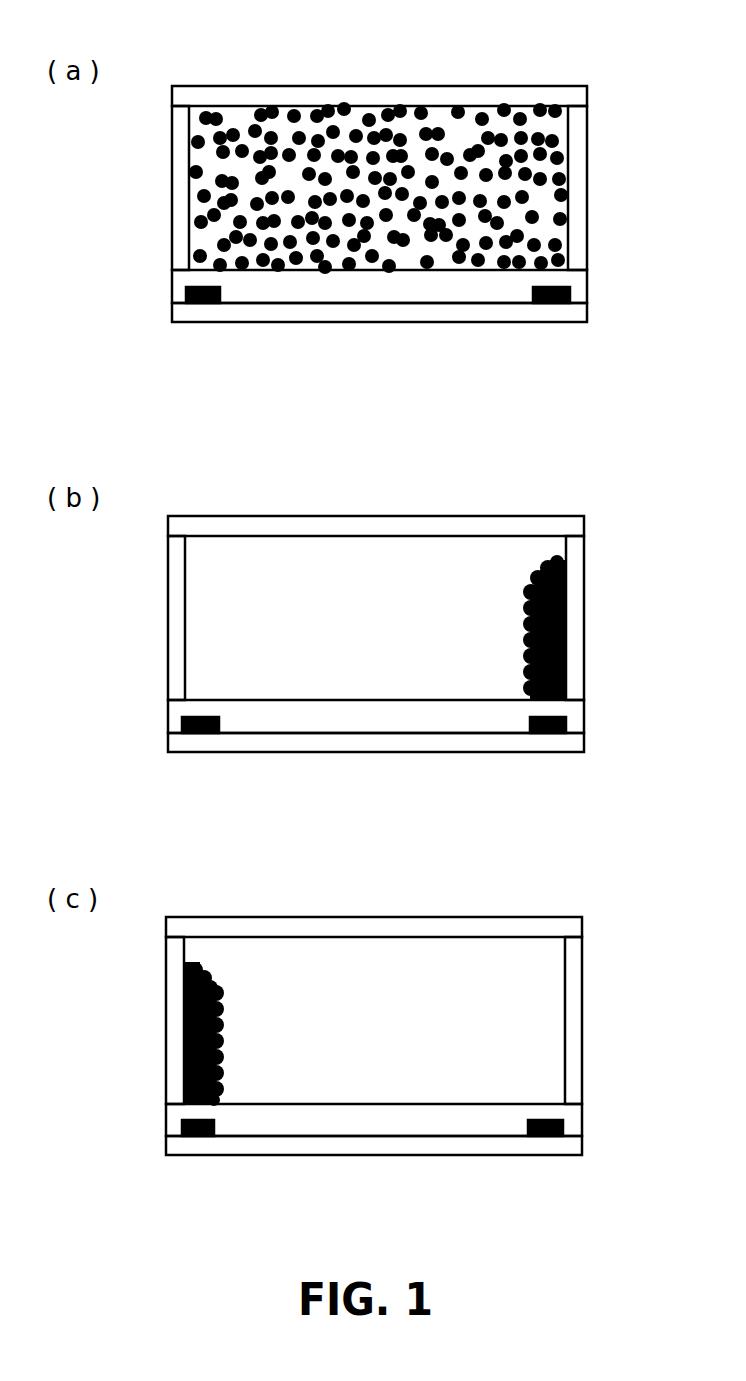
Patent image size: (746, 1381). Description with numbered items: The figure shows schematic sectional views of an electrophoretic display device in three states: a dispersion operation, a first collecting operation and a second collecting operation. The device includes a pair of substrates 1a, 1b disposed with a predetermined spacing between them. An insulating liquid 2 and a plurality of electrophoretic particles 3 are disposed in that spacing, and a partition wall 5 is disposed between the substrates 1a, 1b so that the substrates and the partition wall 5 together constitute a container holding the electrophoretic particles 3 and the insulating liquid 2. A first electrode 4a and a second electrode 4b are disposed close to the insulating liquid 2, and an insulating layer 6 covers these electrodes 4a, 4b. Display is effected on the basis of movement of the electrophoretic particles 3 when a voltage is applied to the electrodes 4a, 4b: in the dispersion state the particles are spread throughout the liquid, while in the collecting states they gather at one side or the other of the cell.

The substrate 1a is at (253, 97).
The substrate 1b is at (390, 316).
The insulating liquid 2 is at (380, 100).
The electrophoretic particles 3 is at (470, 100).
The first electrode 4a is at (200, 303).
The second electrode 4b is at (560, 303).
The partition wall 5 is at (180, 173).
The insulating layer 6 is at (322, 290).